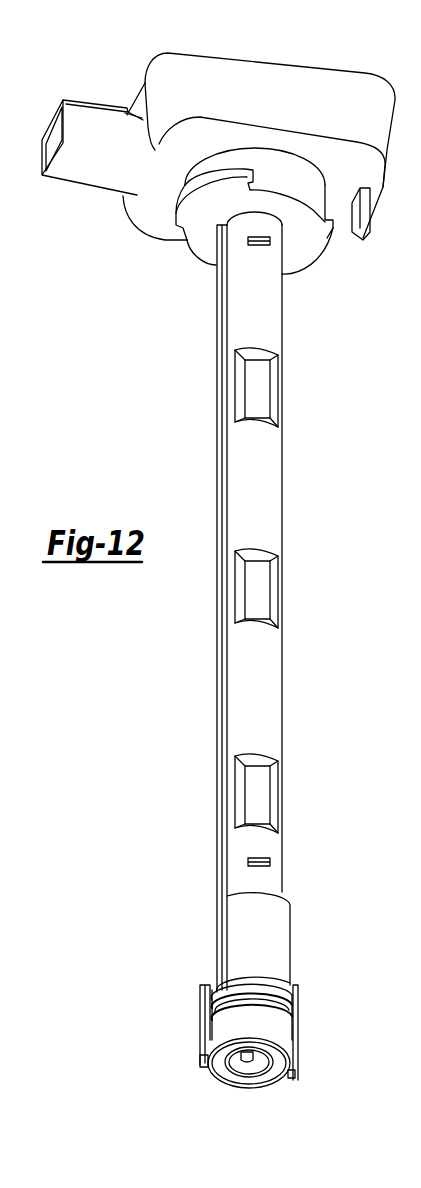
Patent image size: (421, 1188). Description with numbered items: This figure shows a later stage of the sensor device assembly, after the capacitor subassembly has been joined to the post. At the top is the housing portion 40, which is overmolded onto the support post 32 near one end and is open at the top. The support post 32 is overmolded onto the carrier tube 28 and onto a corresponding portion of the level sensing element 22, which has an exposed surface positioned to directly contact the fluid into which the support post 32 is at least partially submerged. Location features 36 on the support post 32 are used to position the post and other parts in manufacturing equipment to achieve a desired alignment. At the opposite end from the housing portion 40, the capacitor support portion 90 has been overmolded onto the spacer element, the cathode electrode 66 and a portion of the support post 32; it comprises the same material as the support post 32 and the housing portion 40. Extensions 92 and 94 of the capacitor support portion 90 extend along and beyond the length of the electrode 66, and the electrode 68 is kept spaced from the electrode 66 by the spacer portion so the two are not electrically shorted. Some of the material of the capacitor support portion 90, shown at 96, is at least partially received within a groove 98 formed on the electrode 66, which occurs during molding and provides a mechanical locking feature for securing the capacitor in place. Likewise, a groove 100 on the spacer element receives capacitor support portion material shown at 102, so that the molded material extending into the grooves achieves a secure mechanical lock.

The housing portion 40 is at (343, 68).
The location features 36 is at (268, 242).
The carrier tube 28 is at (265, 588).
The support post 32 is at (273, 700).
The level sensing element 22 is at (218, 775).
The capacitor support portion 90 is at (297, 965).
The groove 100 is at (255, 987).
The capacitor support portion material 102 is at (217, 993).
The groove 98 is at (290, 998).
The capacitor support portion material 96 is at (217, 1018).
The extension 92 is at (200, 1060).
The extension 94 is at (293, 1082).
The cathode electrode 66 is at (213, 1080).
The electrode 68 is at (250, 1082).